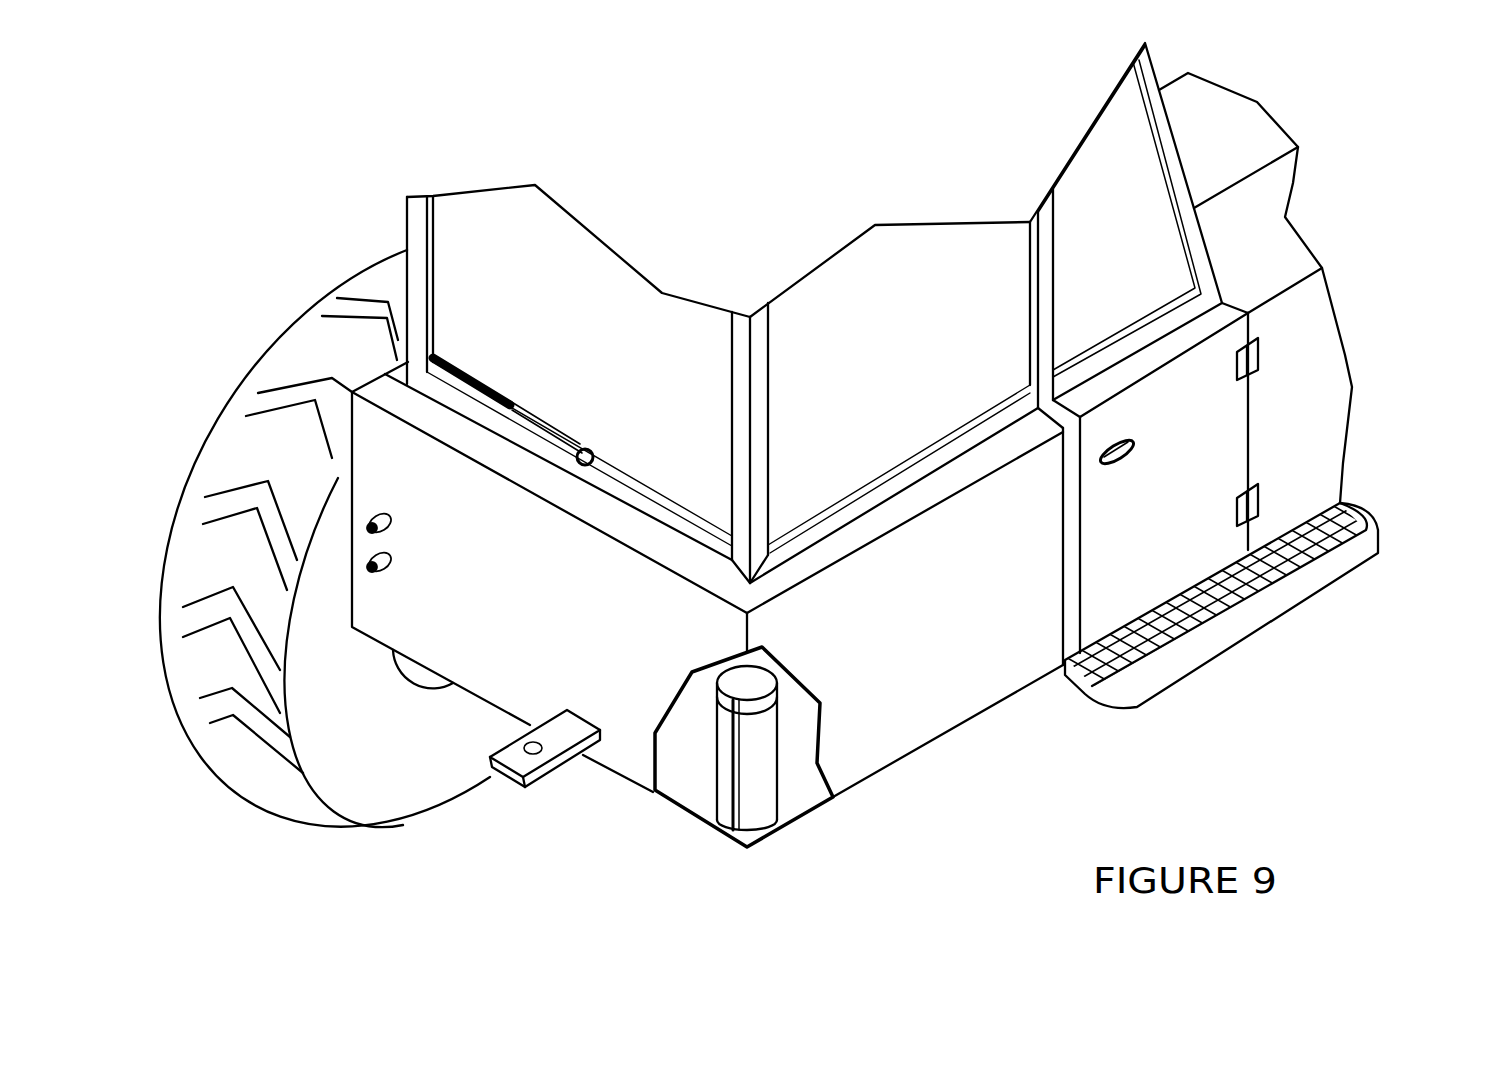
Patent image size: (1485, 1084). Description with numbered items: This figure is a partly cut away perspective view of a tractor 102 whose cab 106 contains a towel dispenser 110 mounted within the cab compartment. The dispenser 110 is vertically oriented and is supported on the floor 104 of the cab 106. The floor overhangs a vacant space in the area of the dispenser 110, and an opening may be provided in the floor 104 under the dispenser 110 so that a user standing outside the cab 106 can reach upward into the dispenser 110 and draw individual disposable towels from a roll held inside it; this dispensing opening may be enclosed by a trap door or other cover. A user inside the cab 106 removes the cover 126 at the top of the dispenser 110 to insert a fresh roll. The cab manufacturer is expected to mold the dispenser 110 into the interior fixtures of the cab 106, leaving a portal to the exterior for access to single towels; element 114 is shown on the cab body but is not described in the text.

The tractor 102 is at (806, 435).
The floor 104 is at (783, 770).
The cab 106 is at (1208, 643).
The dispenser 110 is at (686, 793).
The side panel 114 is at (908, 618).
The cover 126 is at (671, 767).